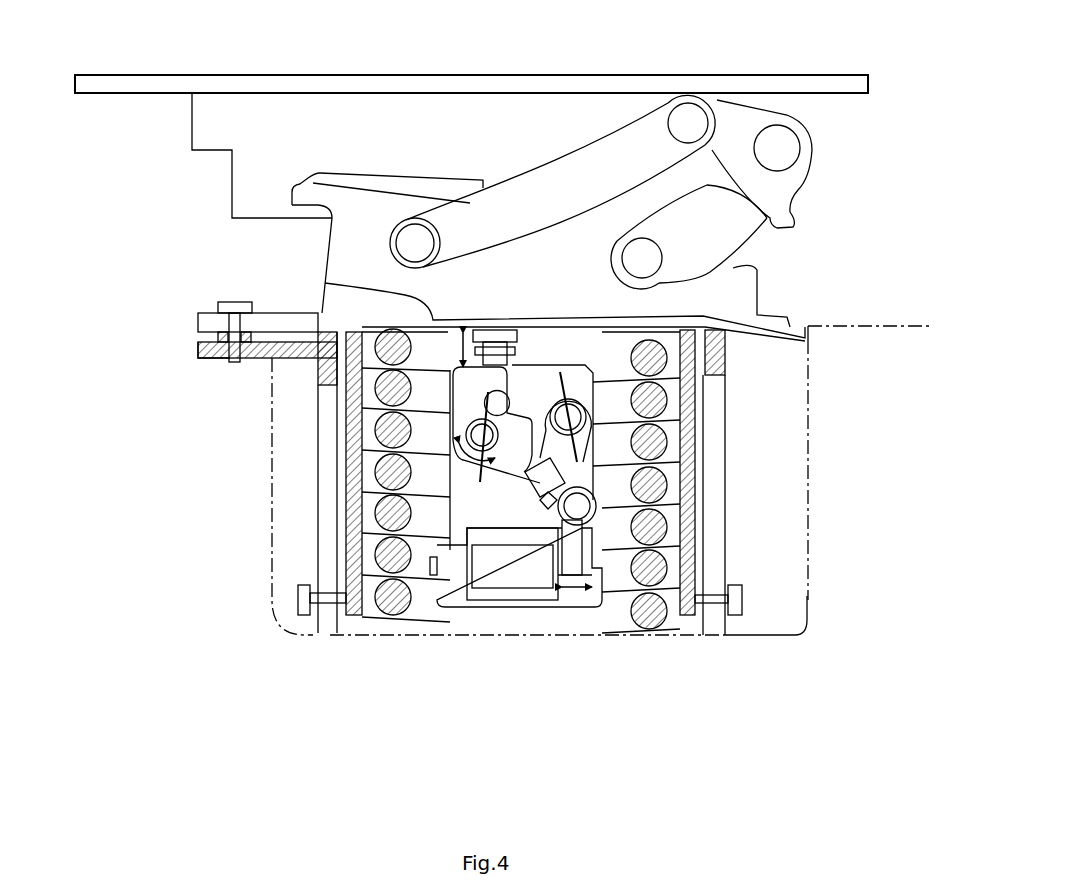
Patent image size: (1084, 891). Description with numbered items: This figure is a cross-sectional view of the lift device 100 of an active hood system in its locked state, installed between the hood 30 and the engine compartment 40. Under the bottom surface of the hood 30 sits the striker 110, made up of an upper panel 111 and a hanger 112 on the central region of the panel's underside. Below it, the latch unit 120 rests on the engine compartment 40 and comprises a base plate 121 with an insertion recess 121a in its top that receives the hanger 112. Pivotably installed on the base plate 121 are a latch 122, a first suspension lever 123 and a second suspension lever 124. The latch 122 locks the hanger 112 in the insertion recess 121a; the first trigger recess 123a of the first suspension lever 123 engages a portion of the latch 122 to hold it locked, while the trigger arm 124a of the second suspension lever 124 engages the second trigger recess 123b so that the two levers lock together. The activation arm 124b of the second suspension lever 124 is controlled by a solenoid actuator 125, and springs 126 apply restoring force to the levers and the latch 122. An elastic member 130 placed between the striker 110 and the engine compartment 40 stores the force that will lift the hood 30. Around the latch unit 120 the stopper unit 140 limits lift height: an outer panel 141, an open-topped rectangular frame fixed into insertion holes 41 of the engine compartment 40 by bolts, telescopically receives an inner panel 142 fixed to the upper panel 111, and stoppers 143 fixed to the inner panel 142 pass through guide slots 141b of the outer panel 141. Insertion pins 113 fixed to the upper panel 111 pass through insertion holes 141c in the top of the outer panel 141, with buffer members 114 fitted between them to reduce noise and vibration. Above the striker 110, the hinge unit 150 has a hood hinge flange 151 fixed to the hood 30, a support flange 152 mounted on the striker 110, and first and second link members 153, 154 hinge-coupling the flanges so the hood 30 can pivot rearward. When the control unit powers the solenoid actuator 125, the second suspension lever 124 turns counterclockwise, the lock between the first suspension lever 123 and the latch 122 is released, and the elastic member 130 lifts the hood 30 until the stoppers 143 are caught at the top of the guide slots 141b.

The hood 30 is at (290, 82).
The engine compartment 40 is at (870, 325).
The insertion holes 41 is at (797, 618).
The lift device 100 is at (883, 207).
The striker 110 is at (148, 185).
The upper panel 111 is at (345, 333).
The hanger 112 is at (338, 292).
The insertion pins 113 is at (222, 307).
The buffer members 114 is at (213, 333).
The latch unit 120 is at (880, 357).
The base plate 121 is at (600, 410).
The insertion recess 121a is at (520, 380).
The latch 122 is at (597, 390).
The first suspension lever 123 is at (590, 438).
The first trigger recess 123a is at (535, 483).
The second trigger recess 123b is at (522, 488).
The second suspension lever 124 is at (585, 484).
The trigger arm 124a is at (562, 528).
The activation arm 124b is at (595, 575).
The solenoid actuator 125 is at (660, 530).
The springs 126 is at (593, 452).
The elastic member 130 is at (370, 467).
The stopper unit 140 is at (355, 690).
The outer panel 141 is at (420, 482).
The guide slots 141b is at (320, 397).
The insertion holes 141c is at (172, 383).
The inner panel 142 is at (358, 615).
The stoppers 143 is at (305, 615).
The hinge unit 150 is at (789, 105).
The hood hinge flange 151 is at (477, 122).
The support flange 152 is at (362, 197).
The first link member 153 is at (592, 155).
The second link member 154 is at (723, 207).